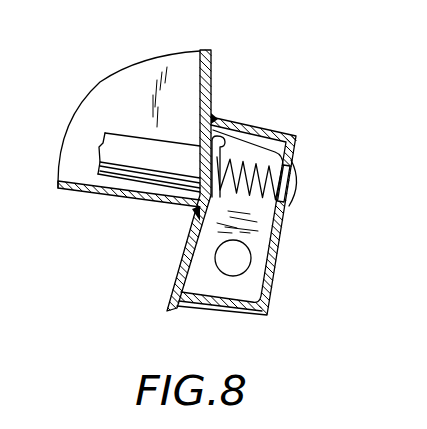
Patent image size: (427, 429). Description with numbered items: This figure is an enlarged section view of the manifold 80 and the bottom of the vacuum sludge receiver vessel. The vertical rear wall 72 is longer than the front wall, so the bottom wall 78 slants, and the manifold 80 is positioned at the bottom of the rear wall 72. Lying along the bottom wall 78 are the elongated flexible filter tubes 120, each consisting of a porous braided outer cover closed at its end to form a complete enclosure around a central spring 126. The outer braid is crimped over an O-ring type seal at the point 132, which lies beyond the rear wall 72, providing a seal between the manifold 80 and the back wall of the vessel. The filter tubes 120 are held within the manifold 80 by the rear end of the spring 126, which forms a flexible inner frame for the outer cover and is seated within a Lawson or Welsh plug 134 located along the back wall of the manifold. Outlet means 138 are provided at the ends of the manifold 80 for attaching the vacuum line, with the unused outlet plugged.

The rear wall 72 is at (213, 82).
The bottom wall 78 is at (83, 191).
The manifold 80 is at (277, 263).
The elongated flexible filter tubes 120 is at (128, 145).
The central spring 126 is at (253, 157).
The crimp point of braid over O-ring seal 132 is at (215, 132).
The plug 134 is at (297, 182).
The outlet means 138 is at (233, 276).